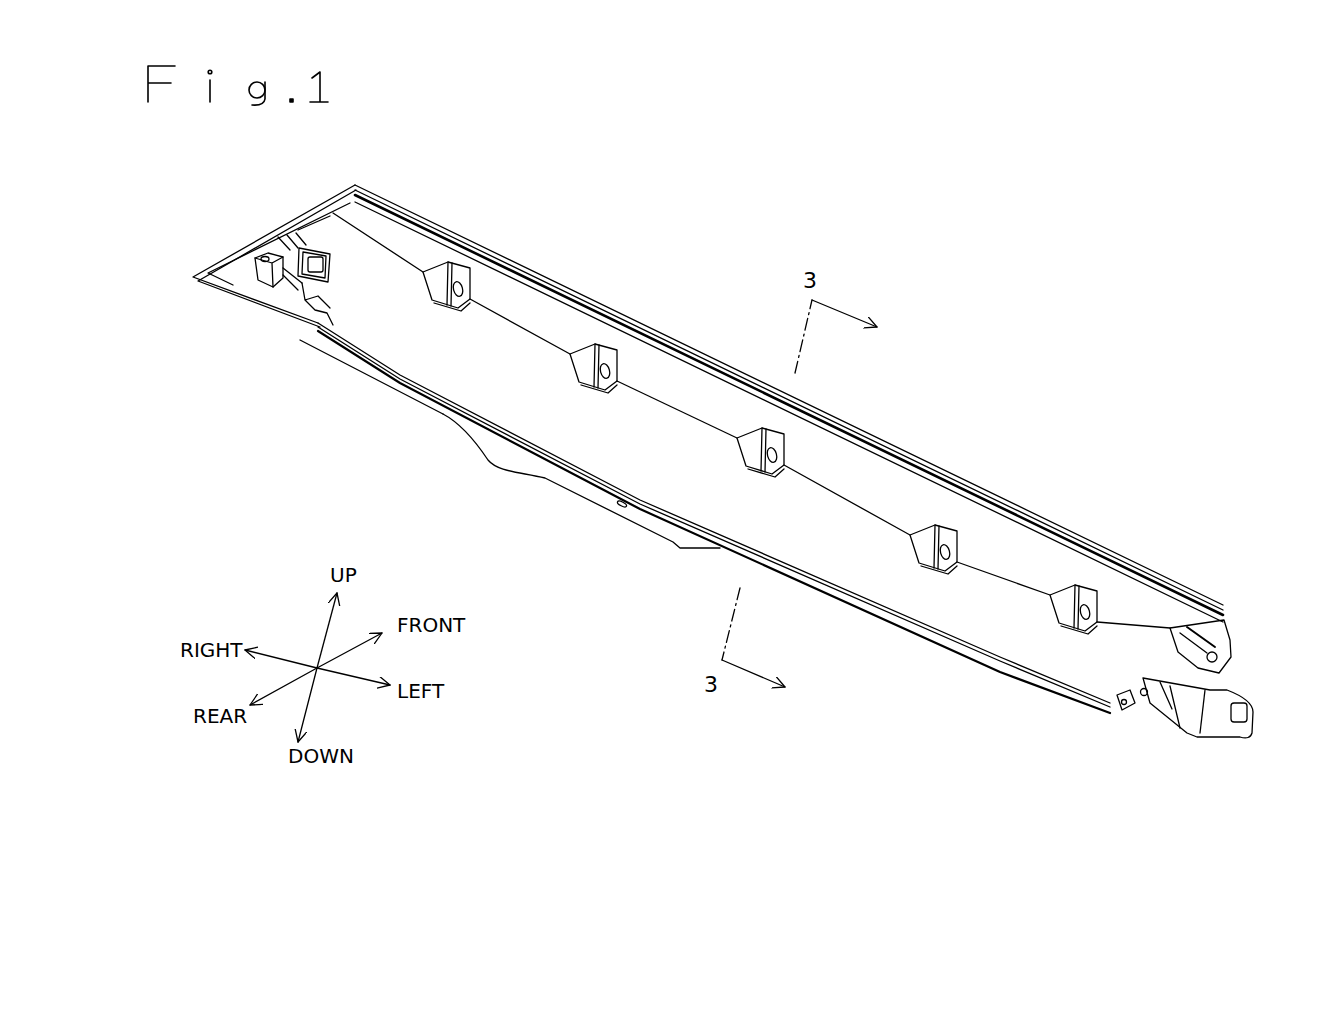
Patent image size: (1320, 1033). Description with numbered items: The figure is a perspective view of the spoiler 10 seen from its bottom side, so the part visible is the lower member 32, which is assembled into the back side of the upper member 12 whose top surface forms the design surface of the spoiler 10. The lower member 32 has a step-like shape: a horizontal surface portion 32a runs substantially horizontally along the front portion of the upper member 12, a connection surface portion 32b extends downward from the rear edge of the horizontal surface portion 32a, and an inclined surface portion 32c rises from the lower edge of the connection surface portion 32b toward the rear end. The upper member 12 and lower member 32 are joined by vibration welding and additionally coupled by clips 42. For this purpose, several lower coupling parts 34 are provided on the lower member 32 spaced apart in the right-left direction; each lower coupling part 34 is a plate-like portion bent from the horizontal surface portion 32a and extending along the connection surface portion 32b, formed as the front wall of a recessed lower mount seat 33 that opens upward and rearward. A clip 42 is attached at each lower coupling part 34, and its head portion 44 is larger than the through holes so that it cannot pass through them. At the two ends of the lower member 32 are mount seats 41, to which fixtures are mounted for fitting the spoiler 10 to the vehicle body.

The spoiler 10 is at (1165, 271).
The upper member 12 is at (1176, 582).
The lower member 32 is at (1061, 700).
The horizontal surface portion 32a is at (880, 503).
The connection surface portion 32b is at (630, 466).
The inclined surface portion 32c is at (332, 357).
The lower mount seat 33 is at (436, 265).
The lower coupling part 34 is at (463, 302).
The mount seat 41 is at (302, 282).
The clip 42 is at (456, 283).
The head portion 44 is at (462, 289).